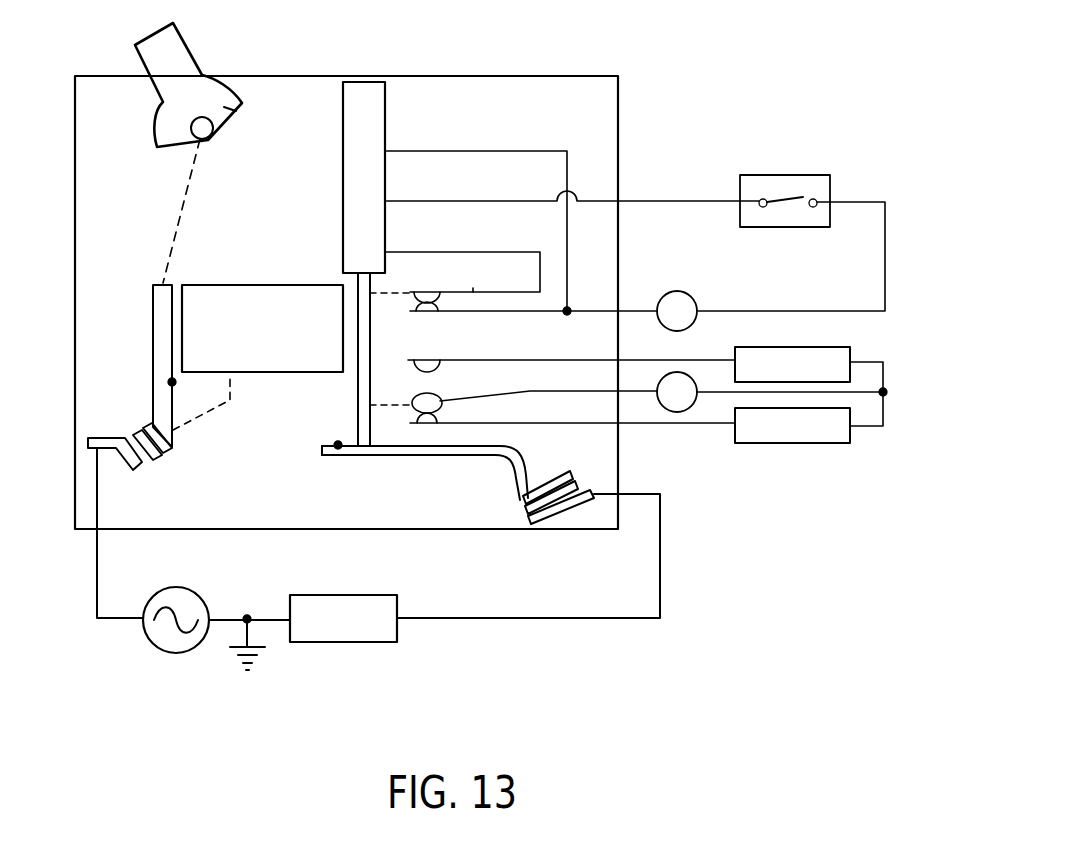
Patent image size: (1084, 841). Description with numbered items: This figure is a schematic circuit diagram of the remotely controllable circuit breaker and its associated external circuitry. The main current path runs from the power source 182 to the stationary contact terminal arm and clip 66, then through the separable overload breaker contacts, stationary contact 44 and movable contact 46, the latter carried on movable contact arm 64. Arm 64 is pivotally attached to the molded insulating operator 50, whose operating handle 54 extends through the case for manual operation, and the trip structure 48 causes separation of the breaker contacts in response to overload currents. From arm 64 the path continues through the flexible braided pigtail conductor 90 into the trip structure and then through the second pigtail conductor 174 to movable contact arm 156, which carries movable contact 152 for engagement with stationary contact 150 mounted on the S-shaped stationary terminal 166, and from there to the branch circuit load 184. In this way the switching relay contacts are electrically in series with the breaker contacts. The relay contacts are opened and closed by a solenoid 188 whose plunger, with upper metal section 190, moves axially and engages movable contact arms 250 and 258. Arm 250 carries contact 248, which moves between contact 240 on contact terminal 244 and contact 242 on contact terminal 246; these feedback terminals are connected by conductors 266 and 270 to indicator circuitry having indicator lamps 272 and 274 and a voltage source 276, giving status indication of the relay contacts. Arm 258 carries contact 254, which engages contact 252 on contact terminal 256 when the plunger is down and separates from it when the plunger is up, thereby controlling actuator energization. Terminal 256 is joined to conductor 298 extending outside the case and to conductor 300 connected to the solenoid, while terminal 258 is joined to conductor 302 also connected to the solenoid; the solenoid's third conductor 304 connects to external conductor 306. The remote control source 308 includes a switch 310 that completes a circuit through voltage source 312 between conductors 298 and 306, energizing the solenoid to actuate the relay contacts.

The operating handle 54 is at (186, 53).
The molded insulating operator 50 is at (242, 103).
The solenoid 188 is at (343, 110).
The upper metal section of plunger 190 is at (357, 282).
The trip structure 48 is at (252, 285).
The flexible braided pigtail conductor 90 is at (172, 382).
The movable contact arm 64 is at (174, 448).
The stationary contact terminal arm and clip 66 is at (112, 437).
The stationary contact 44 is at (147, 467).
The movable contact 46 is at (152, 468).
The flexible braided pigtail conductor 174 is at (338, 442).
The movable contact arm 156 is at (410, 456).
The movable contact 152 is at (527, 494).
The stationary contact 150 is at (526, 507).
The stationary terminal 166 is at (527, 517).
The power source 182 is at (195, 590).
The branch circuit load 184 is at (360, 595).
The conductor 300 is at (497, 133).
The third conductor of solenoid 304 is at (420, 201).
The conductor 306 is at (648, 201).
The remote control source 308 is at (780, 175).
The switch 310 is at (803, 198).
The voltage source 312 is at (692, 297).
The conductor 298 is at (650, 311).
The conductor 302 is at (430, 252).
The contact 254 is at (438, 277).
The movable contact arm 258 is at (473, 290).
The contact 252 is at (424, 313).
The contact terminal 256 is at (477, 312).
The contact terminal 246 is at (500, 361).
The contact 242 is at (432, 372).
The conductor 270 is at (650, 361).
The contact 240 is at (442, 408).
The movable contact arm 250 is at (537, 391).
The contact 248 is at (418, 421).
The contact terminal 244 is at (537, 424).
The indicator lamp 274 is at (828, 347).
The indicator lamp 272 is at (827, 443).
The conductor 266 is at (698, 424).
The voltage source 276 is at (695, 404).